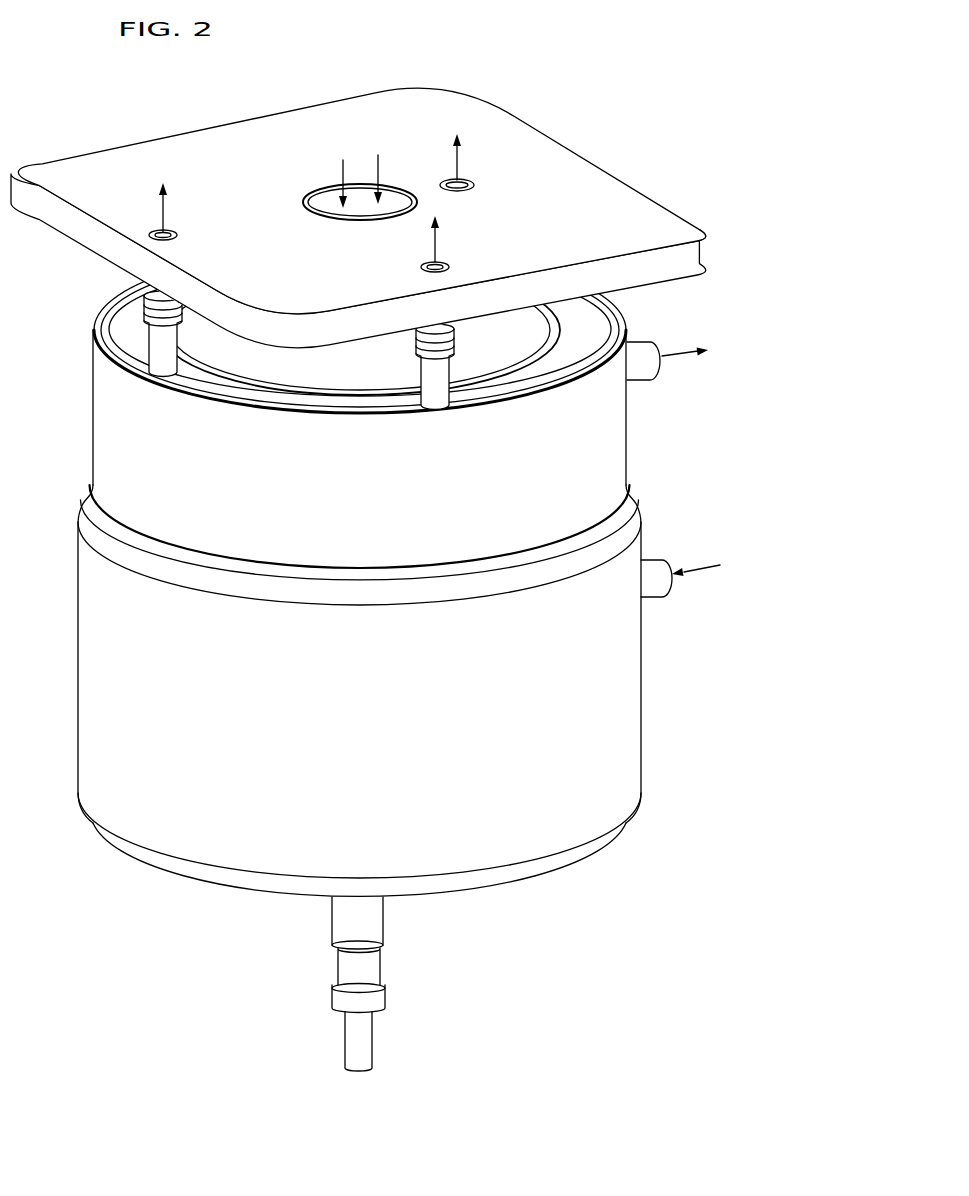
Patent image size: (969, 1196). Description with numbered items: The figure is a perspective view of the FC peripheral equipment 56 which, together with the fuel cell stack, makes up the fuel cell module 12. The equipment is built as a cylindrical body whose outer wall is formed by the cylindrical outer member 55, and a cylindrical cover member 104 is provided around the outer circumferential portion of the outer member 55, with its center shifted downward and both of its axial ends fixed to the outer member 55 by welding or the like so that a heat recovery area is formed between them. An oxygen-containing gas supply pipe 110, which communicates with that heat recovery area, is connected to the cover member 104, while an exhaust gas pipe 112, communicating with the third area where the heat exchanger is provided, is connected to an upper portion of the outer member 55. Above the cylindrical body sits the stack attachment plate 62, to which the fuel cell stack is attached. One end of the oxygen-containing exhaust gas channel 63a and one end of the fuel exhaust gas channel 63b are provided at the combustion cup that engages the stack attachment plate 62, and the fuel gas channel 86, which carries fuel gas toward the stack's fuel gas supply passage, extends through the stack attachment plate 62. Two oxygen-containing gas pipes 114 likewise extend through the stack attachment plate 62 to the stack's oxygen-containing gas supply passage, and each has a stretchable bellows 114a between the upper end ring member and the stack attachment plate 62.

The FC peripheral equipment 56 is at (376, 556).
The fuel cell module 12 is at (541, 63).
The stack attachment plate 62 is at (598, 187).
The oxygen-containing exhaust gas channel 63a is at (341, 172).
The fuel exhaust gas channel 63b is at (380, 166).
The fuel gas channel 86 is at (450, 180).
The oxygen-containing gas pipes 114 is at (152, 232).
The bellows 114a is at (163, 308).
The exhaust gas pipe 112 is at (645, 348).
The oxygen-containing gas supply pipe 110 is at (655, 562).
The outer member 55 is at (78, 461).
The cover member 104 is at (78, 710).